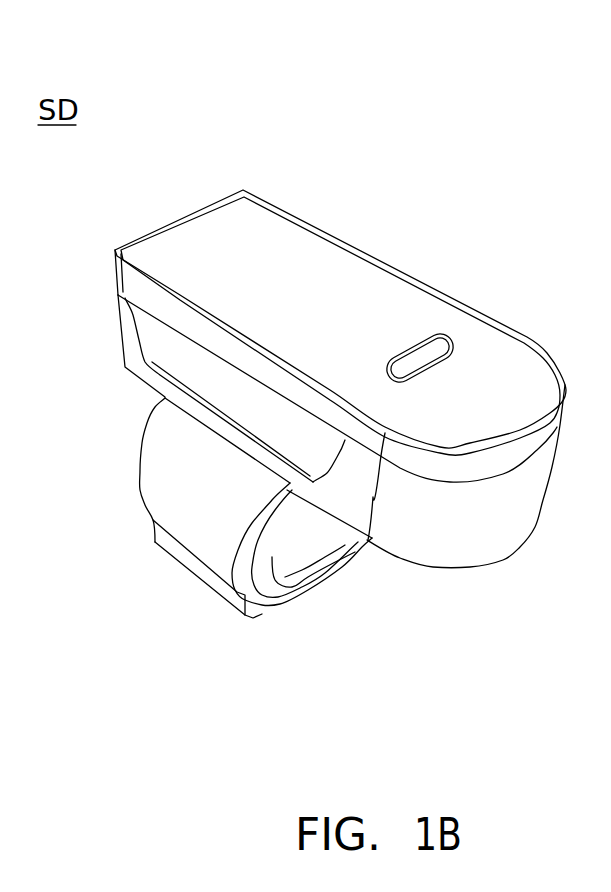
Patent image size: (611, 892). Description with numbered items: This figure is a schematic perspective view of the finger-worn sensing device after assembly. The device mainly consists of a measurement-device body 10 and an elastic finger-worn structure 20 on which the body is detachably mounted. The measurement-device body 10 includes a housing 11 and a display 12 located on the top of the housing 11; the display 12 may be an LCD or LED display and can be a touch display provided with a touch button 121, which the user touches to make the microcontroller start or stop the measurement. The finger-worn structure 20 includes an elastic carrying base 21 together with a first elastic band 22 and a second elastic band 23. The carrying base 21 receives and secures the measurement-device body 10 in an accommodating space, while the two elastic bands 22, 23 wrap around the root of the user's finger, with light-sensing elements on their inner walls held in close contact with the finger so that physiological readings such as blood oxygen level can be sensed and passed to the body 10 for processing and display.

The measurement-device body 10 is at (164, 208).
The housing 11 is at (170, 358).
The display 12 is at (305, 258).
The touch button 121 is at (435, 348).
The elastic finger-worn structure 20 is at (136, 434).
The carrying base 21 is at (478, 537).
The first elastic band 22 is at (303, 543).
The second elastic band 23 is at (170, 478).